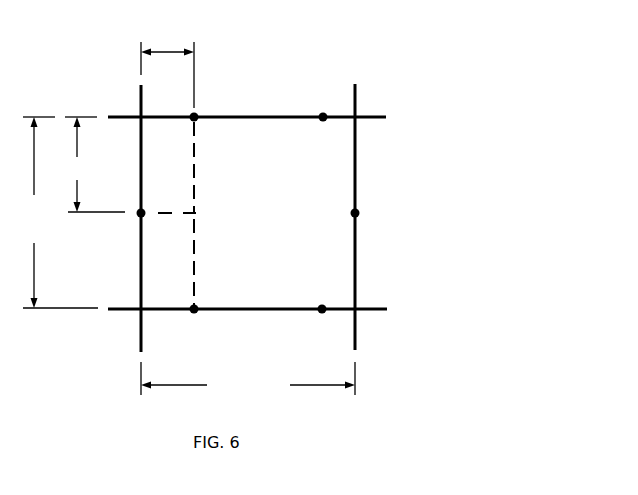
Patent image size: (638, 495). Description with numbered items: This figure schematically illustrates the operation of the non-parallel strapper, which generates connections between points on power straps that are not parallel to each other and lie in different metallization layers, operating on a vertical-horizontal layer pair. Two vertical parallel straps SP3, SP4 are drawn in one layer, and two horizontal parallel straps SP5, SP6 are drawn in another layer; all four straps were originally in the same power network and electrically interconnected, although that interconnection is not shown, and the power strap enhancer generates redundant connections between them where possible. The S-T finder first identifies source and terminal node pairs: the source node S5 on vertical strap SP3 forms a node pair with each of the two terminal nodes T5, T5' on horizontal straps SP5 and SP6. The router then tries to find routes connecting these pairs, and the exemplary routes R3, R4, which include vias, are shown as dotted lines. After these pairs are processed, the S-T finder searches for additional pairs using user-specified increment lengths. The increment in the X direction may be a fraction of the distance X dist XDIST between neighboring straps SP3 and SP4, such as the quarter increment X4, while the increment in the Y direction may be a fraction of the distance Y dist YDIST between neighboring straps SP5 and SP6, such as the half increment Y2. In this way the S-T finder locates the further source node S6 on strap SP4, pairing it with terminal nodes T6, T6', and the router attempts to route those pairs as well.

The parallel strap SP3 is at (121, 218).
The parallel strap SP4 is at (373, 217).
The parallel strap SP5 is at (247, 130).
The parallel strap SP6 is at (247, 295).
The terminal node T5 is at (205, 106).
The terminal node T6 is at (322, 106).
The terminal node T5' is at (197, 321).
The terminal node T6' is at (324, 321).
The source node S5 is at (129, 223).
The source node S6 is at (367, 214).
The route R3 is at (187, 167).
The route R4 is at (187, 262).
The incremental length in the X direction X4 is at (167, 65).
The incremental length in the Y direction Y2 is at (93, 164).
The distance X dist XDIST is at (248, 379).
The distance Y dist YDIST is at (55, 212).